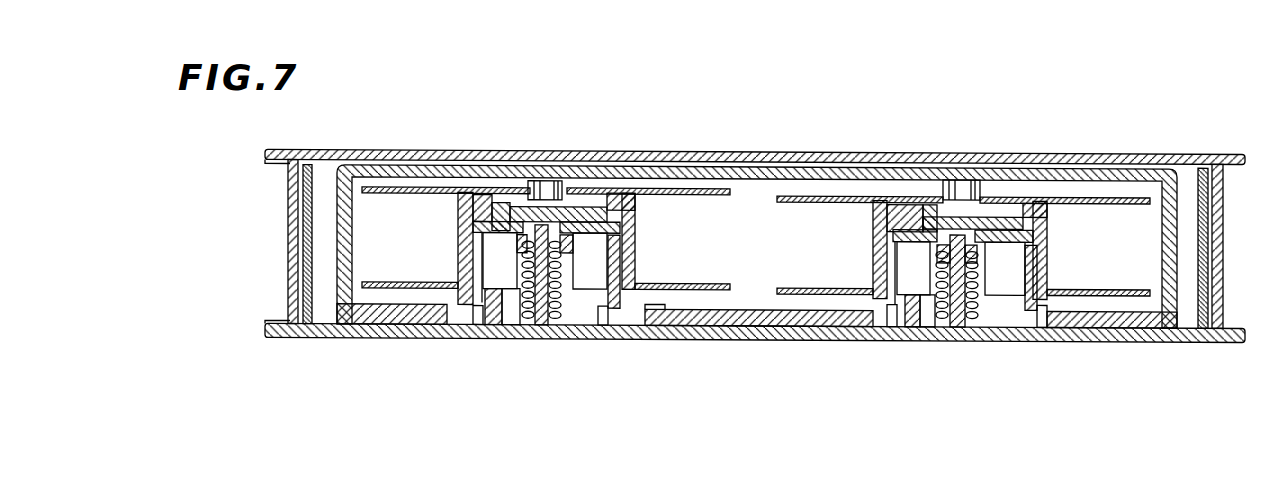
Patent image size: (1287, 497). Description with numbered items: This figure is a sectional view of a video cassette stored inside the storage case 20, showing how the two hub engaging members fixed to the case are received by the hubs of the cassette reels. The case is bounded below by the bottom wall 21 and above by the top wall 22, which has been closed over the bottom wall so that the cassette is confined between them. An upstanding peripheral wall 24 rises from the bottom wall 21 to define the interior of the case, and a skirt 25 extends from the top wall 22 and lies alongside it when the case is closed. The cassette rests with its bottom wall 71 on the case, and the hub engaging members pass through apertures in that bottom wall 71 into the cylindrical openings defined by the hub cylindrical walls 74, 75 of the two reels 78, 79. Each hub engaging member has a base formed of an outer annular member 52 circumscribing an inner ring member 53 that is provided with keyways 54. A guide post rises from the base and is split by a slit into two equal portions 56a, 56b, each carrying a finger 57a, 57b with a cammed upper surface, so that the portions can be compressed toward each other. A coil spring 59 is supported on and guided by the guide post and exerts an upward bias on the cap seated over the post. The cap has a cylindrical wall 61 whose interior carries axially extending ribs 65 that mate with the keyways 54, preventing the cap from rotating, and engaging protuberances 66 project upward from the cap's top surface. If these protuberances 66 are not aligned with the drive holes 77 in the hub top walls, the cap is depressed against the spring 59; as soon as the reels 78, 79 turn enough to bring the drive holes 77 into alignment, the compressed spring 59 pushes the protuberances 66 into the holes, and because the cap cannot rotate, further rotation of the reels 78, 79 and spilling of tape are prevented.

The storage case 20 is at (1247, 146).
The bottom wall 21 is at (755, 337).
The top wall 22 is at (718, 149).
The peripheral wall 24 is at (305, 258).
The skirt 25 is at (290, 197).
The outer annular member 52 is at (452, 338).
The inner ring member 53 is at (496, 337).
The keyways 54 is at (479, 323).
The guide post portion 56a is at (524, 270).
The guide post portion 56b is at (562, 272).
The finger 57a is at (526, 238).
The finger 57b is at (600, 238).
The coil spring 59 is at (578, 333).
The cylindrical wall 61 is at (472, 253).
The ribs 65 is at (613, 338).
The engaging protuberances 66 is at (520, 180).
The cassette bottom wall 71 is at (762, 308).
The hub cylindrical wall 74 is at (600, 204).
The hub cylindrical wall 75 is at (1010, 214).
The drive holes 77 is at (503, 205).
The reel 78 is at (413, 185).
The reel 79 is at (848, 192).